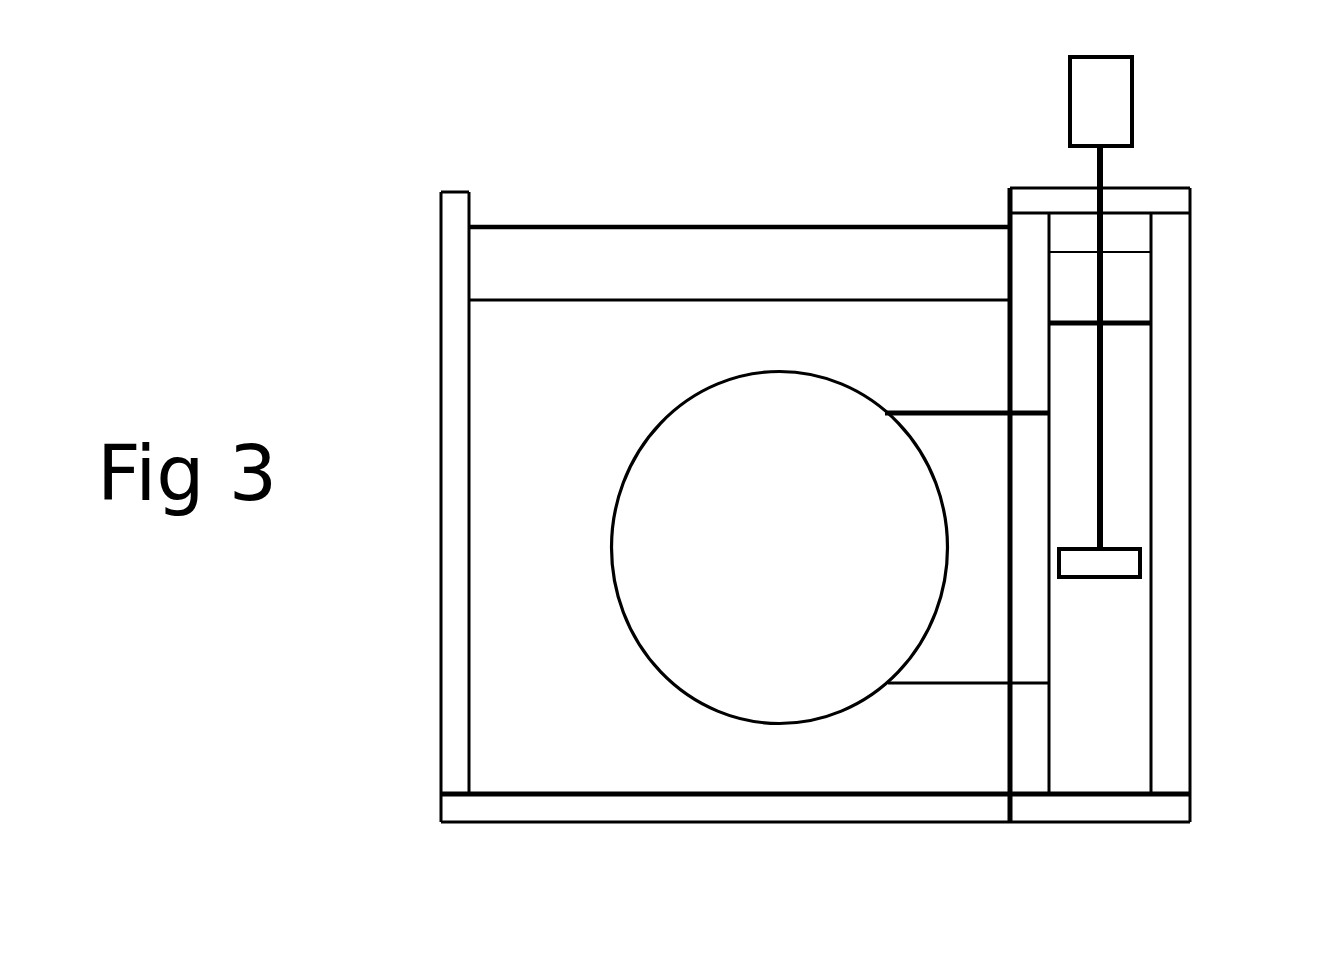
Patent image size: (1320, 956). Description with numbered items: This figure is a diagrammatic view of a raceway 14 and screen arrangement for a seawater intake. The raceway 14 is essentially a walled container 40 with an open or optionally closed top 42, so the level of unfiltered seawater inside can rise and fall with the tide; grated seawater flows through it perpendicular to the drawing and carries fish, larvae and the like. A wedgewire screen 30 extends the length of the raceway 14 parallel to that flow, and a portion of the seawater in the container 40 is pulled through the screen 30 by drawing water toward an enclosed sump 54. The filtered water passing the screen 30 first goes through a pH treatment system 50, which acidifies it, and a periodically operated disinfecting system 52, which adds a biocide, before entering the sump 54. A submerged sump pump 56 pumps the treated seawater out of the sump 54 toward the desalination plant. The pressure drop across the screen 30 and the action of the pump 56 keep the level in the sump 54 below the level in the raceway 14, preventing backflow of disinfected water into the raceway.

The raceway 14 is at (806, 428).
The screen 30 is at (653, 432).
The walled container 40 is at (468, 577).
The top 42 is at (773, 216).
The pH treatment system 50 is at (925, 685).
The disinfecting system 52 is at (1105, 660).
The sump 54 is at (1166, 485).
The sump pump 56 is at (1103, 395).